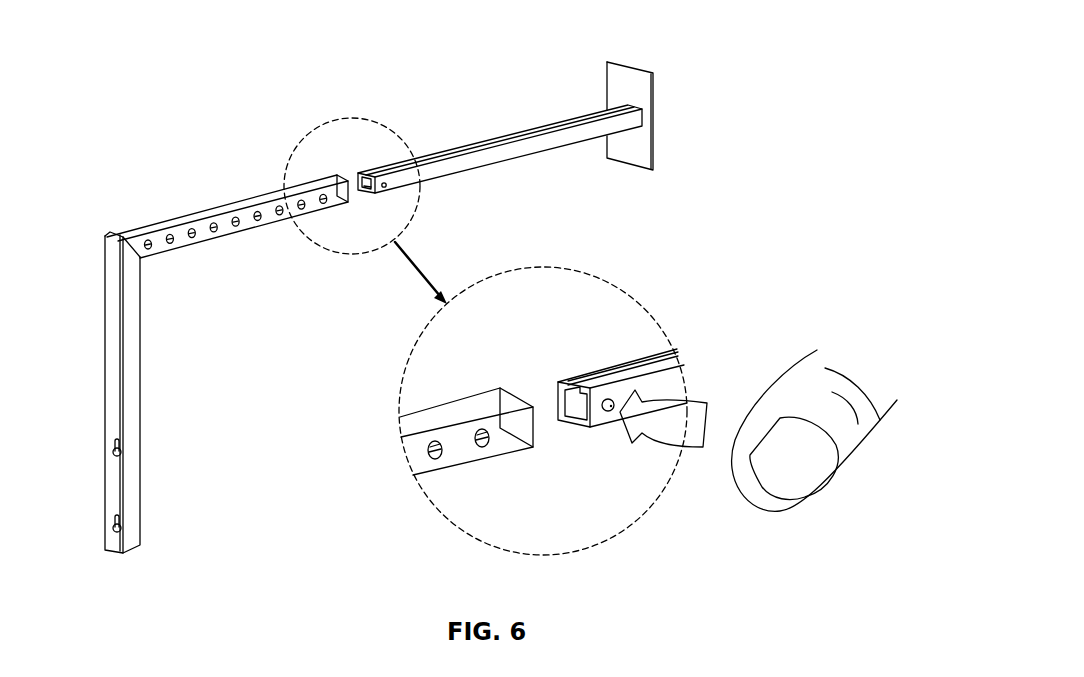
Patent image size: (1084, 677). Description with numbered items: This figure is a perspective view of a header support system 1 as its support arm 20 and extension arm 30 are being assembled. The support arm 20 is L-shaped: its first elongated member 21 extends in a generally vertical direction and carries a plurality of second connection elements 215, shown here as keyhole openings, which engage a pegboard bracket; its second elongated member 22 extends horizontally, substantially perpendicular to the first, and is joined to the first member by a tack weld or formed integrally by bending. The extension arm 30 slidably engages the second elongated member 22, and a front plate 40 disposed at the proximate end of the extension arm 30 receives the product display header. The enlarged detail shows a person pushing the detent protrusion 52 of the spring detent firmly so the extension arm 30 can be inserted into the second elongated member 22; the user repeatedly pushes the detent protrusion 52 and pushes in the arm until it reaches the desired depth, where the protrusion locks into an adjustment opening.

The header support system 1 is at (197, 166).
The support arm 20 is at (80, 260).
The first elongated member 21 is at (105, 313).
The second elongated member 22 is at (228, 236).
The extension arm 30 is at (503, 136).
The front plate 40 is at (632, 66).
The detent protrusion 52 is at (612, 411).
The second connection elements 215 is at (113, 452).